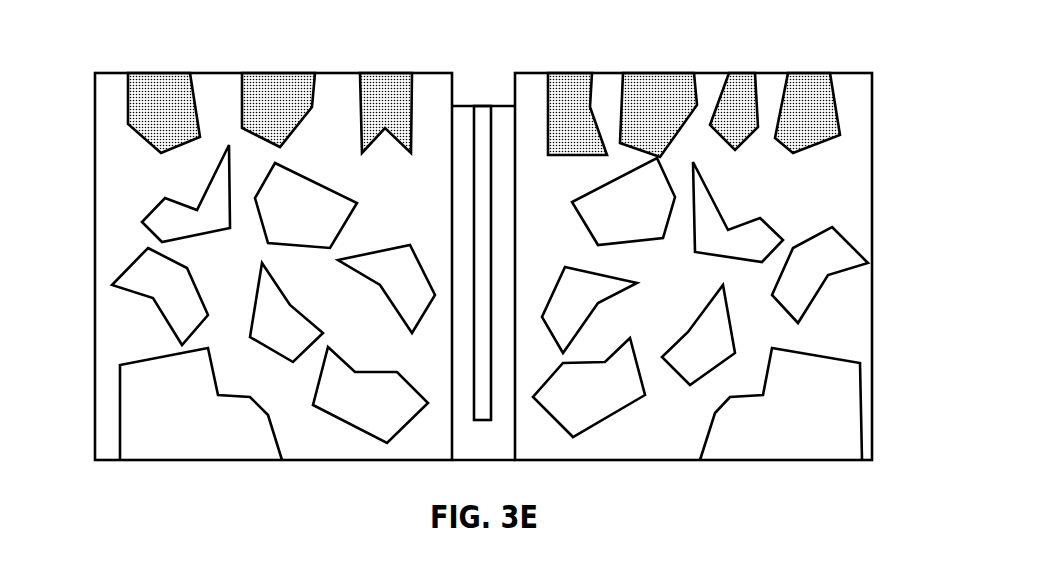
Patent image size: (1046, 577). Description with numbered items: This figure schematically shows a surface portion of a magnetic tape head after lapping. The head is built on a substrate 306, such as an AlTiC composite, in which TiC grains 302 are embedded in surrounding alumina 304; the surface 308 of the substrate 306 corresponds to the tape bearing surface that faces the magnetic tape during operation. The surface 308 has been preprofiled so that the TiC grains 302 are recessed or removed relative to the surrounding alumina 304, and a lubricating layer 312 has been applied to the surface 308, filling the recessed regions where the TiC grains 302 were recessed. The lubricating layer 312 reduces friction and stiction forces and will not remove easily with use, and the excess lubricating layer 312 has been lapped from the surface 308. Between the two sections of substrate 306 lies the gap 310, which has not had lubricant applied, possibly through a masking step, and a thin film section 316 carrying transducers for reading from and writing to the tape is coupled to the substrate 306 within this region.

The TiC grains 302 is at (278, 213).
The alumina 304 is at (110, 184).
The substrate 306 is at (88, 320).
The surface 308 is at (493, 230).
The gap 310 is at (486, 77).
The lubricating layer 312 is at (147, 82).
The thin film section 316 is at (498, 199).